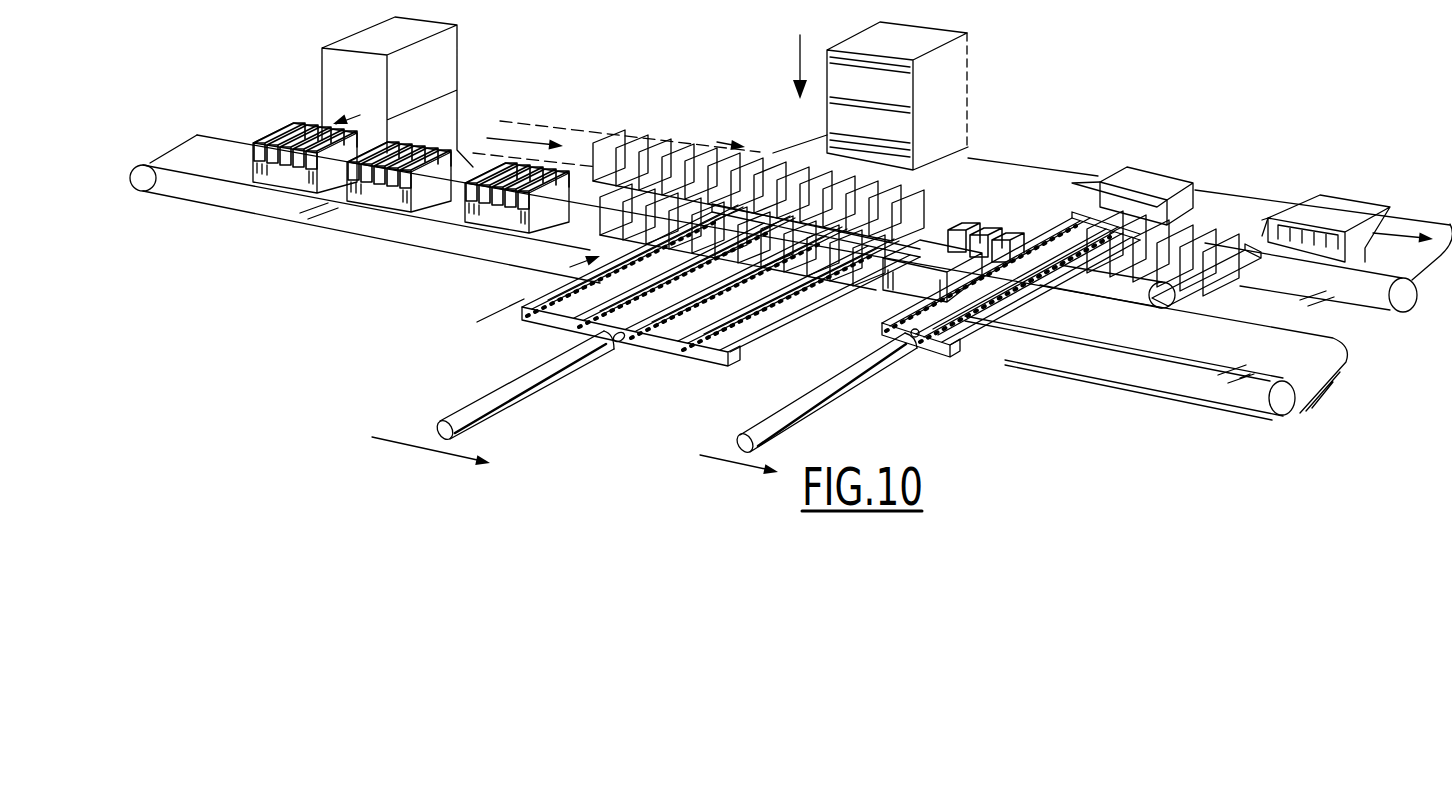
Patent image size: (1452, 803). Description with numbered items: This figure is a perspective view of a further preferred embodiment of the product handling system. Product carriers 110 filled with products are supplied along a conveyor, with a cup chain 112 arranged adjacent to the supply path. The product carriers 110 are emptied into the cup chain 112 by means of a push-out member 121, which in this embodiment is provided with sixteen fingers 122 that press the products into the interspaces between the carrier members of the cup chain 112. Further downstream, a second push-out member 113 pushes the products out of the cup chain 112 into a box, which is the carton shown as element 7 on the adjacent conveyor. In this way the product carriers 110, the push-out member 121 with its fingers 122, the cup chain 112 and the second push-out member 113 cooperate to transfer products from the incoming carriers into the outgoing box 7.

The carton 7 is at (1152, 187).
The product carrier 110 is at (497, 218).
The cup chain 112 is at (691, 138).
The second push-out member 113 is at (938, 358).
The push-out member 121 is at (698, 308).
The fingers 122 is at (560, 332).